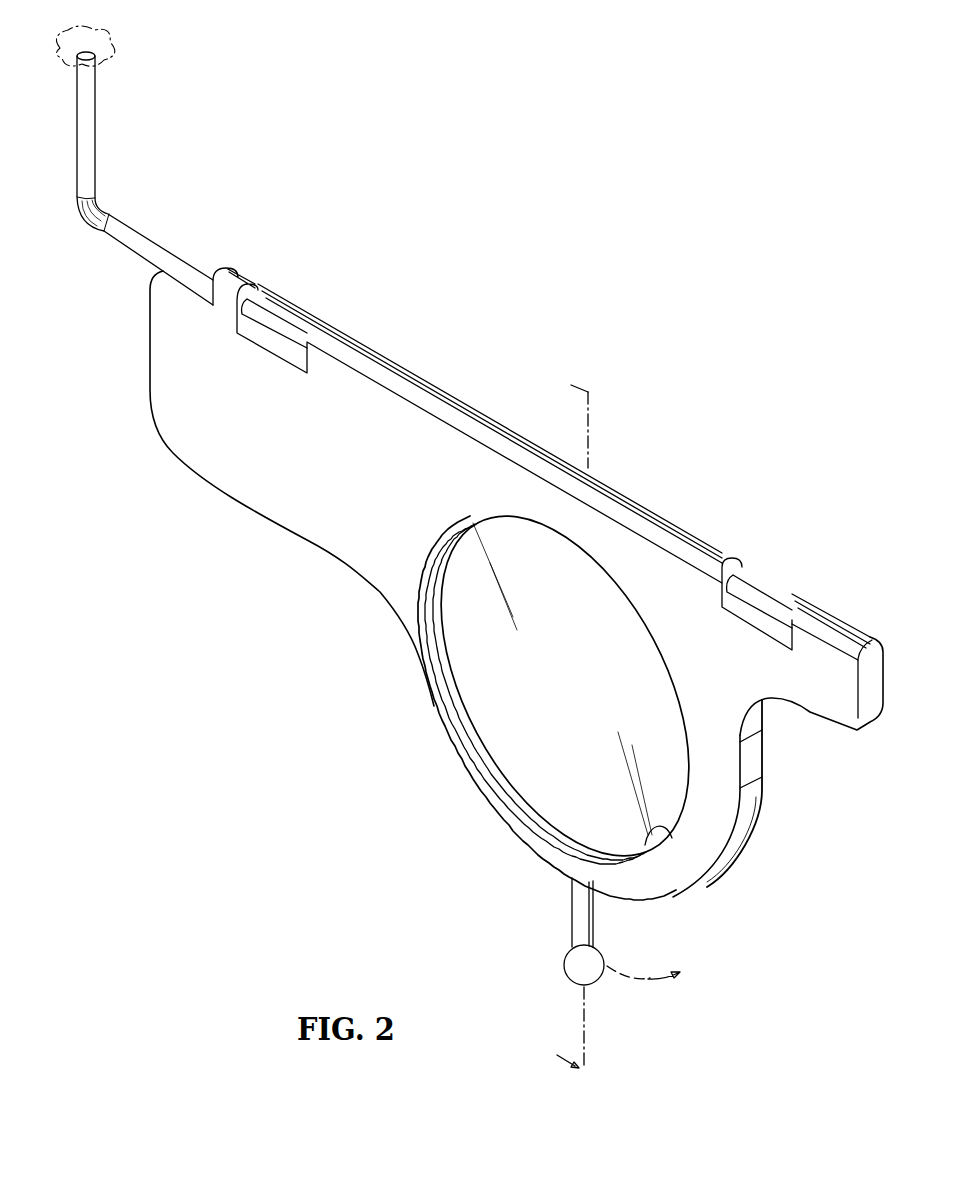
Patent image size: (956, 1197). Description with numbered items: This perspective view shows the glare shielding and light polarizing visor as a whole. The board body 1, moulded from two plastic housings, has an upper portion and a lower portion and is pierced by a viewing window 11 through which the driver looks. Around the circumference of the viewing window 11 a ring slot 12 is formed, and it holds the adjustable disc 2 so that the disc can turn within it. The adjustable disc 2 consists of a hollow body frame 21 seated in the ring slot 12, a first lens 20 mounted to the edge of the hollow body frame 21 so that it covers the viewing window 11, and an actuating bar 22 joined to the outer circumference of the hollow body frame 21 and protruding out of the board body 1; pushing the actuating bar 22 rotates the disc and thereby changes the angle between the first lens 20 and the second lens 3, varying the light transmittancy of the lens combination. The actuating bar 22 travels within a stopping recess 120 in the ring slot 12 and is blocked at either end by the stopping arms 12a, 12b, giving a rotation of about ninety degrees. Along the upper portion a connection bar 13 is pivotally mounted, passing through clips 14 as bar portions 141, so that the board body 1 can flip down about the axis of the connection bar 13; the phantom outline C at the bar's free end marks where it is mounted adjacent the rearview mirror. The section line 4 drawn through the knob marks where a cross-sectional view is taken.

The board body 1 is at (487, 423).
The adjustable disc 2 is at (563, 967).
The second lens 3 is at (765, 740).
The section line 4 is at (563, 716).
The viewing window 11 is at (392, 763).
The ring slot 12 is at (445, 641).
The stopping arm 12a is at (758, 788).
The stopping arm 12b is at (567, 872).
The connection bar 13 is at (127, 232).
The clip 14 is at (743, 566).
The rod portion in clip 141 is at (775, 600).
The first lens 20 is at (660, 827).
The hollow body frame 21 is at (517, 788).
The actuating bar 22 is at (578, 934).
The stopping recess 120 is at (755, 840).
The mounting base C is at (112, 41).